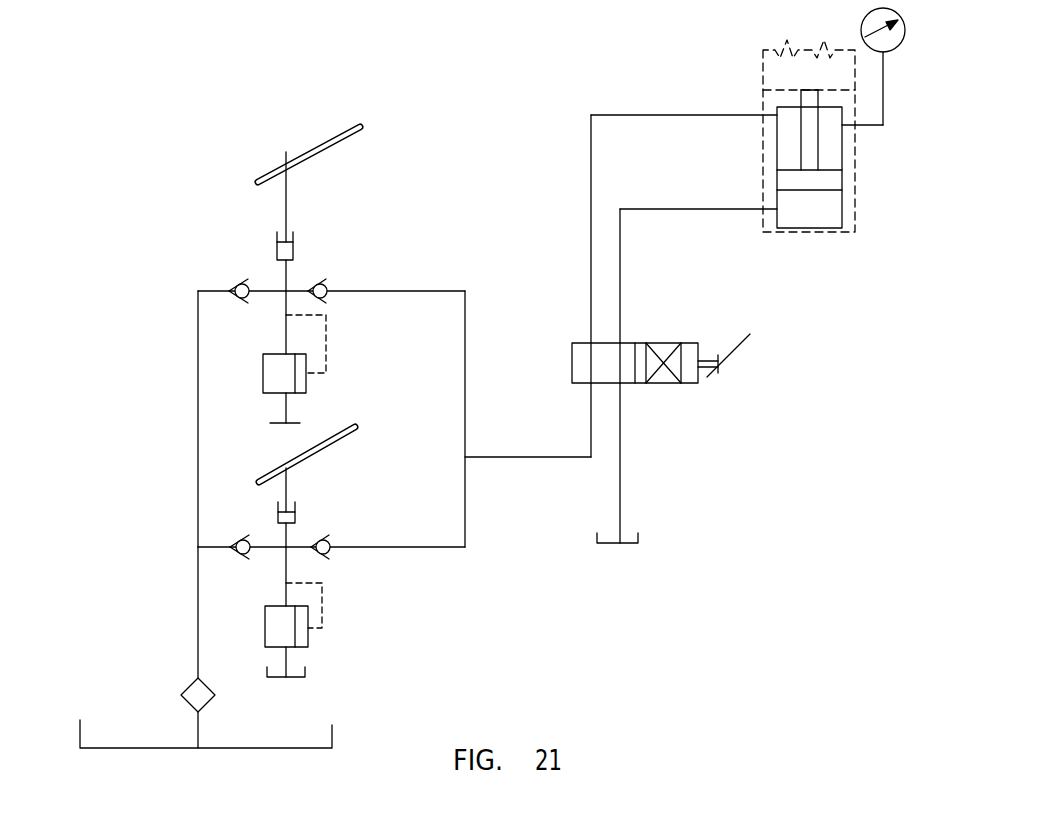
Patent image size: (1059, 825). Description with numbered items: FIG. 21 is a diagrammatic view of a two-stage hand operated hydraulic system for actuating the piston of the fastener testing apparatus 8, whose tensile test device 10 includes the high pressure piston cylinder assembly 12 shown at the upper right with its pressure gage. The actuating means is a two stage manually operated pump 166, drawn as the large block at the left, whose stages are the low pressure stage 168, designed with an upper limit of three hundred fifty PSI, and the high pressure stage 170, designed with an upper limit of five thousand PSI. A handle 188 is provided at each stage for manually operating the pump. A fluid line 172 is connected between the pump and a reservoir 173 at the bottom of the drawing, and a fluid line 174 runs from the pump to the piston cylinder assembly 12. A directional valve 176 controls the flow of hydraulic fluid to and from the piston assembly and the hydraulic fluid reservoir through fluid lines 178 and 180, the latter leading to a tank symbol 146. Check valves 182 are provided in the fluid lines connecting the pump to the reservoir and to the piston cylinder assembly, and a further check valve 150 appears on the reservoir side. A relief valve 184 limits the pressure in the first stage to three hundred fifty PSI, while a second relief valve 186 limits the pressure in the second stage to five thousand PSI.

The fastener testing apparatus 8 is at (755, 109).
The tensile test device 10 is at (818, 88).
The high pressure piston cylinder assembly 12 is at (850, 155).
The tank 146 is at (640, 538).
The check valve 150 is at (240, 284).
The two stage manually operated pump 166 is at (238, 384).
The low pressure stage 168 is at (296, 515).
The high pressure stage 170 is at (295, 250).
The fluid line 172 is at (197, 598).
The reservoir 173 is at (334, 731).
The fluid line 174 is at (518, 459).
The directional valve 176 is at (645, 342).
The fluid line 178 is at (590, 267).
The fluid line 180 is at (622, 300).
The check valves 182 is at (330, 290).
The relief valve 184 is at (308, 636).
The second relief valve 186 is at (306, 383).
The handle 188 is at (302, 152).